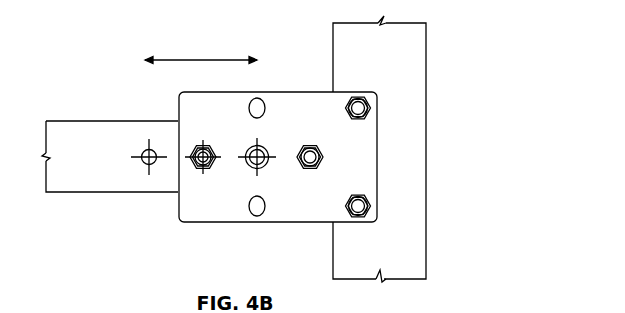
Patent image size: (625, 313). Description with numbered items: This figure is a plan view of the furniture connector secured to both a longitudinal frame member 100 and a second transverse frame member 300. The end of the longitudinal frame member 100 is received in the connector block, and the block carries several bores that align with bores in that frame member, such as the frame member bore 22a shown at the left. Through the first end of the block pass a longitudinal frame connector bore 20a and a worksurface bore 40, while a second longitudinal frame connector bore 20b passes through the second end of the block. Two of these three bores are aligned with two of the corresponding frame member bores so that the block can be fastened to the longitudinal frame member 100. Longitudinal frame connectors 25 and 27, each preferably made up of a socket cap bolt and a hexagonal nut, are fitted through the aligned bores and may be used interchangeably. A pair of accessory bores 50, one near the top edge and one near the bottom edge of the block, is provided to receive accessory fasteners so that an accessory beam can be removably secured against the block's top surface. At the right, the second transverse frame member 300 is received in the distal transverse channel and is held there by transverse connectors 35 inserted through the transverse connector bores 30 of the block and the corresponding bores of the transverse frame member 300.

The longitudinal frame member 100 is at (67, 133).
The frame member bore 22a is at (143, 165).
The longitudinal frame connector bore 20a is at (194, 146).
The longitudinal frame connector 25 is at (196, 169).
The worksurface bore 40 is at (265, 150).
The accessory bore 50 is at (258, 100).
The longitudinal frame connector 27 is at (320, 155).
The longitudinal frame connector bore 20b is at (315, 146).
The transverse connector bore 30 is at (352, 100).
The transverse connector 35 is at (365, 105).
The second transverse frame member 300 is at (410, 73).